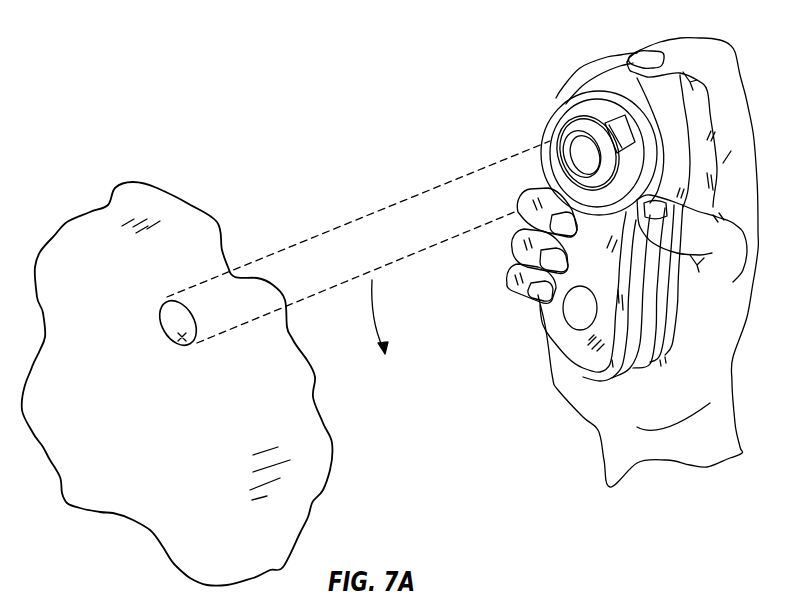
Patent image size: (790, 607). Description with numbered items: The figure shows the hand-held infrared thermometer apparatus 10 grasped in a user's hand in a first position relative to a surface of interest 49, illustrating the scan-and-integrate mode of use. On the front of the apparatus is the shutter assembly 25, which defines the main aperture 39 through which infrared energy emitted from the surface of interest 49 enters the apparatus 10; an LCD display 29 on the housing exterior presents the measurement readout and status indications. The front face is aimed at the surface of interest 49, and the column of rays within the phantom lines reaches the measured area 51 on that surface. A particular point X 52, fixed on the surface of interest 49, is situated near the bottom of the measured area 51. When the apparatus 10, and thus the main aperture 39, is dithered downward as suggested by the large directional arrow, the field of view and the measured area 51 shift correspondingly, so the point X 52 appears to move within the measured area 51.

The thermometer apparatus 10 is at (529, 50).
The shutter assembly 25 is at (548, 122).
The main aperture 39 is at (578, 163).
The LCD display 29 is at (569, 310).
The surface of interest 49 is at (82, 492).
The measured area 51 is at (160, 307).
The point X 52 is at (177, 338).